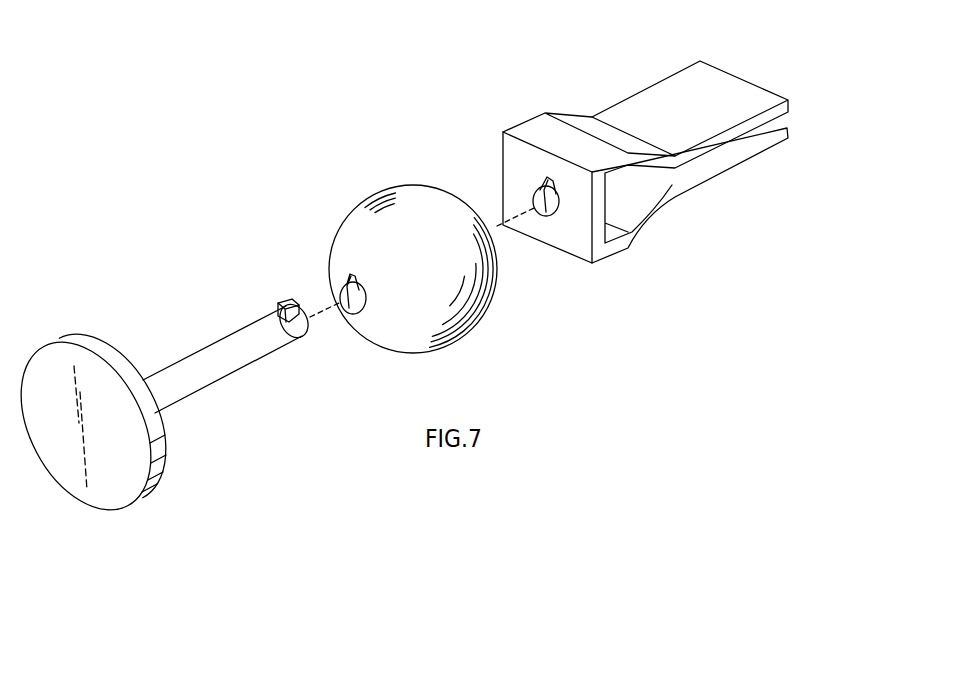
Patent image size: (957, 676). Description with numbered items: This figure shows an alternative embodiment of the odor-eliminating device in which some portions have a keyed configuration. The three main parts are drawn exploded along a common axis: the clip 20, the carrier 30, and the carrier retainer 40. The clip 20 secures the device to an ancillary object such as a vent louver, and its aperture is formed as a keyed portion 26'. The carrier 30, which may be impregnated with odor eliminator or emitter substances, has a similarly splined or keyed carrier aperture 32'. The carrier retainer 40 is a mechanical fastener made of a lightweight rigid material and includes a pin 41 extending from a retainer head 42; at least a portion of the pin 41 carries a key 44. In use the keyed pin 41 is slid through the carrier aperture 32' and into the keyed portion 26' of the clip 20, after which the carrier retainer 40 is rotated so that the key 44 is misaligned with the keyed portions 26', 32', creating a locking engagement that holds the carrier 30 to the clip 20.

The clip 20 is at (728, 242).
The keyed portion of the clip 26' is at (460, 118).
The carrier 30 is at (500, 356).
The keyed carrier aperture 32' is at (295, 235).
The carrier retainer 40 is at (157, 413).
The pin 41 is at (192, 352).
The retainer head 42 is at (120, 478).
The key 44 is at (283, 298).